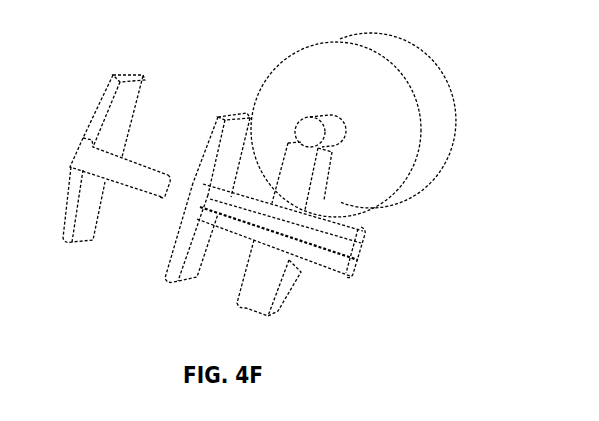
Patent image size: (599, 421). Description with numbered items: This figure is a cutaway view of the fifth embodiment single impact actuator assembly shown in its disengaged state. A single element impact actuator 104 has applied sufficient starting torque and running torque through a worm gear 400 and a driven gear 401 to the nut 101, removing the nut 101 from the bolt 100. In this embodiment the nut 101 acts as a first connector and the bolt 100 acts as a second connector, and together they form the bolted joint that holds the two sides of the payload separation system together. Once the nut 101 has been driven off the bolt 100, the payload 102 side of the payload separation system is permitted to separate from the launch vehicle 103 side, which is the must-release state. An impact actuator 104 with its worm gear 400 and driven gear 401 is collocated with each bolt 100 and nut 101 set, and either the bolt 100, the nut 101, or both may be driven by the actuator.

The bolt 100 is at (81, 144).
The nut 101 is at (209, 195).
The payload 102 is at (67, 232).
The launch vehicle 103 is at (169, 261).
The single element impact actuator 104 is at (358, 91).
The worm gear 400 is at (340, 138).
The driven gear 401 is at (313, 196).